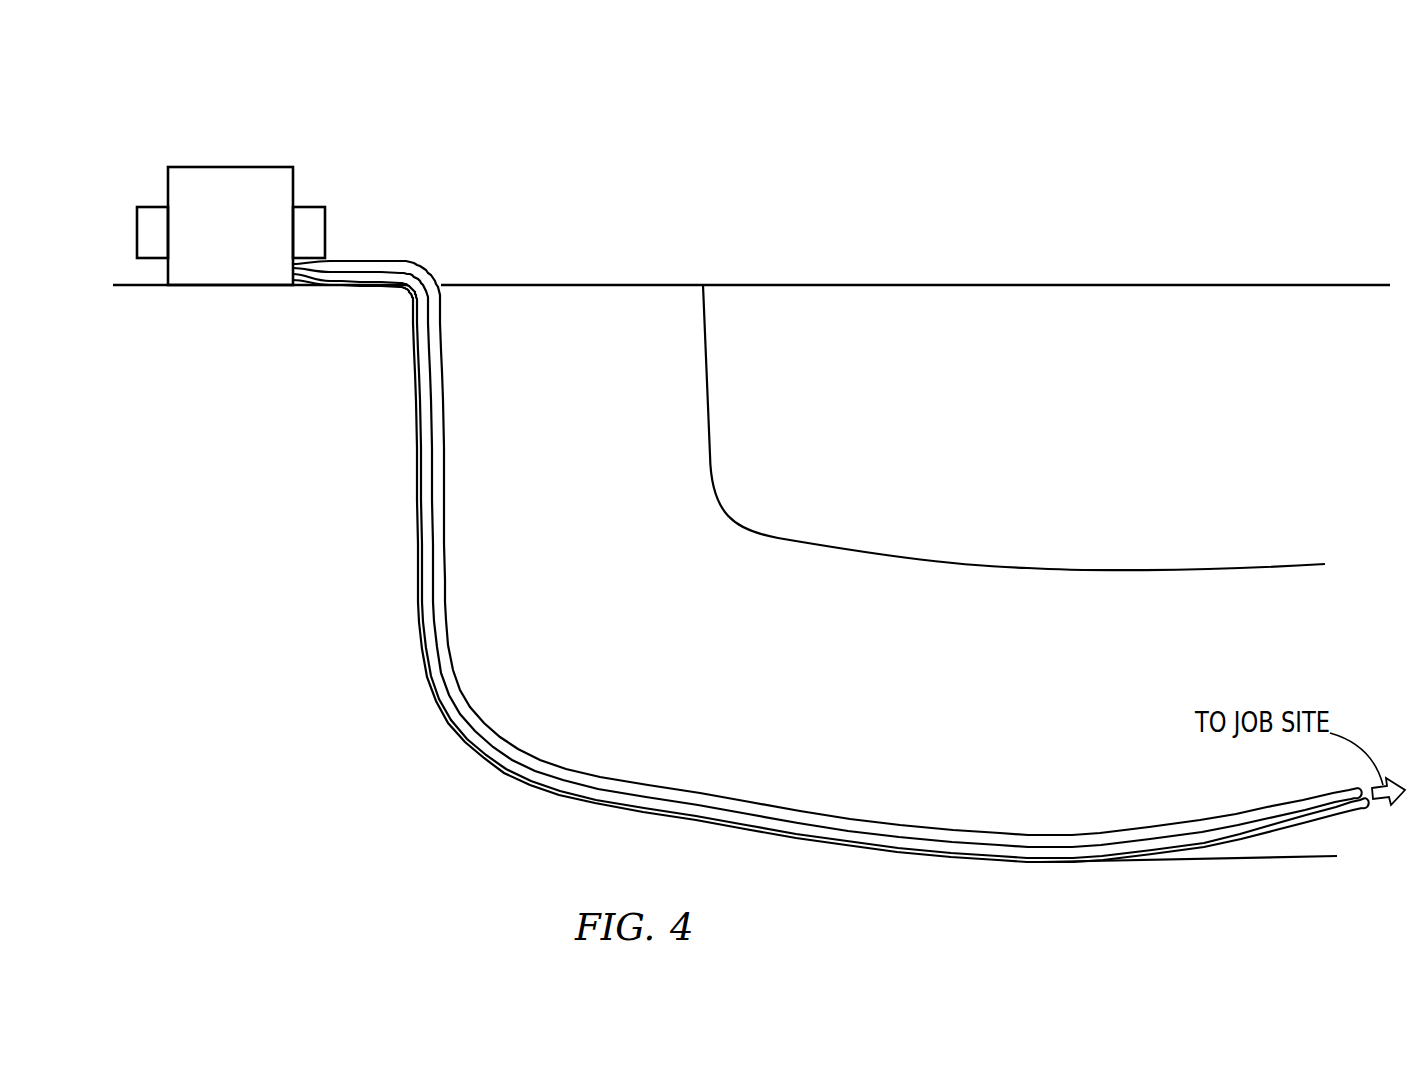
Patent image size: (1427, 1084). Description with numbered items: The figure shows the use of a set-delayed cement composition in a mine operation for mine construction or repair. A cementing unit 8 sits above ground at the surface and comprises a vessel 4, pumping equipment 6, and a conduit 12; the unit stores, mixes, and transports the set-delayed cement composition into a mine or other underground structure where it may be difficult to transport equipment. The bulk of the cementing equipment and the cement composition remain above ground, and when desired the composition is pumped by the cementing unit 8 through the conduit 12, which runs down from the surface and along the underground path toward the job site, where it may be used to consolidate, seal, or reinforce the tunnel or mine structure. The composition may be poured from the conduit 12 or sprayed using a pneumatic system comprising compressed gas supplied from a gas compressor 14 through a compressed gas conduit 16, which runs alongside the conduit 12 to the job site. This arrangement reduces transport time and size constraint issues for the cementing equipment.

The cementing unit 8 is at (228, 170).
The vessel 4 is at (225, 167).
The pumping equipment 6 is at (137, 226).
The gas compressor 14 is at (310, 207).
The compressed gas conduit 16 is at (444, 420).
The conduit 12 is at (545, 777).